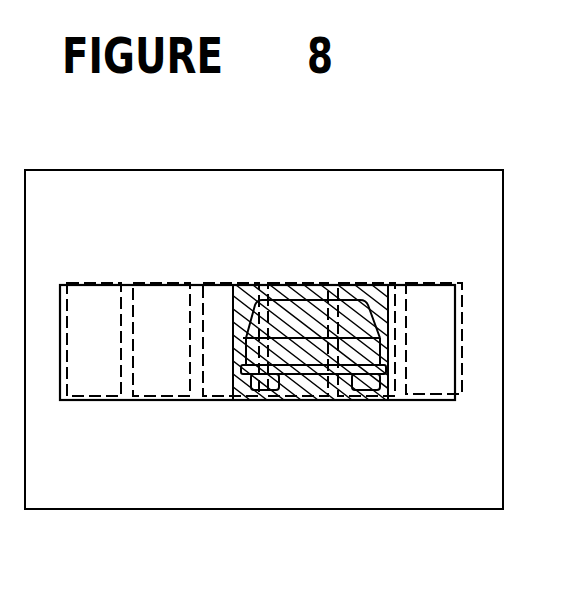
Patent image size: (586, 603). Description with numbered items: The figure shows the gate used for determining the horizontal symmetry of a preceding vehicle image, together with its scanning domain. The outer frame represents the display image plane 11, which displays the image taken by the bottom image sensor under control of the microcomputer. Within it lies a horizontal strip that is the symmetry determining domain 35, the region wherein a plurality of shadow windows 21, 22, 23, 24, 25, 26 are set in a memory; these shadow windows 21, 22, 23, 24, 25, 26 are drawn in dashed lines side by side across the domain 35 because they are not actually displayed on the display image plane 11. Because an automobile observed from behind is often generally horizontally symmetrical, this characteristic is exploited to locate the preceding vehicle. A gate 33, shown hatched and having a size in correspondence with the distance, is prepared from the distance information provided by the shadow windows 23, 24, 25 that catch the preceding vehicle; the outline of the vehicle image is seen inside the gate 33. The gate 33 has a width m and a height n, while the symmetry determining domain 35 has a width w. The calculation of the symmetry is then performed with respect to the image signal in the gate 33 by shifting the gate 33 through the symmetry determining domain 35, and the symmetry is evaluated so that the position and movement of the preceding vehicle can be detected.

The display image plane 11 is at (503, 425).
The shadow window 21 is at (93, 282).
The shadow window 22 is at (165, 282).
The shadow window 23 is at (233, 282).
The shadow window 24 is at (303, 282).
The shadow window 25 is at (380, 283).
The shadow window 26 is at (428, 283).
The gate 33 is at (335, 282).
The symmetry determining domain 35 is at (157, 400).